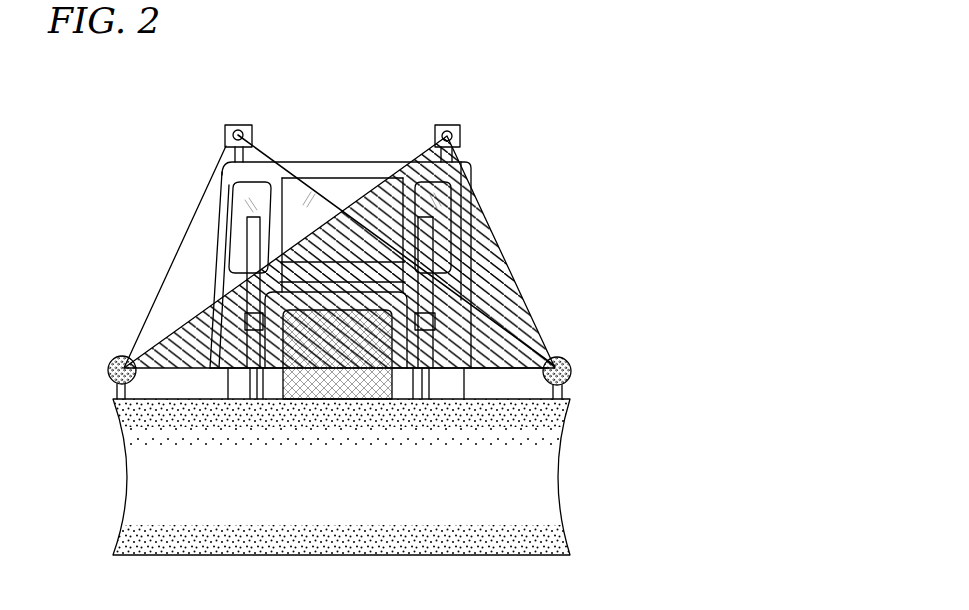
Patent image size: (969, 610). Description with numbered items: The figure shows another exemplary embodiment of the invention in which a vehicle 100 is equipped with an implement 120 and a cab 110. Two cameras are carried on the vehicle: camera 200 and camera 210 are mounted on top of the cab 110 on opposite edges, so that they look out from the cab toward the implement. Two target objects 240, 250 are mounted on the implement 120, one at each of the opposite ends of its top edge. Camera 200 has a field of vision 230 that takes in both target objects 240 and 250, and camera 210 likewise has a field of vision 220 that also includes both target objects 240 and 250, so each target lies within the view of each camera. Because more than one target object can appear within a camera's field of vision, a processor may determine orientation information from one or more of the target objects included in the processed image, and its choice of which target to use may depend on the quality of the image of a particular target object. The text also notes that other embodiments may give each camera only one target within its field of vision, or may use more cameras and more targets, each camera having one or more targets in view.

The vehicle 100 is at (509, 96).
The cab 110 is at (222, 212).
The implement 120 is at (545, 478).
The camera 200 is at (238, 125).
The camera 210 is at (450, 125).
The field of vision 220 is at (503, 250).
The field of vision 230 is at (168, 282).
The target object 240 is at (107, 370).
The target object 250 is at (572, 368).